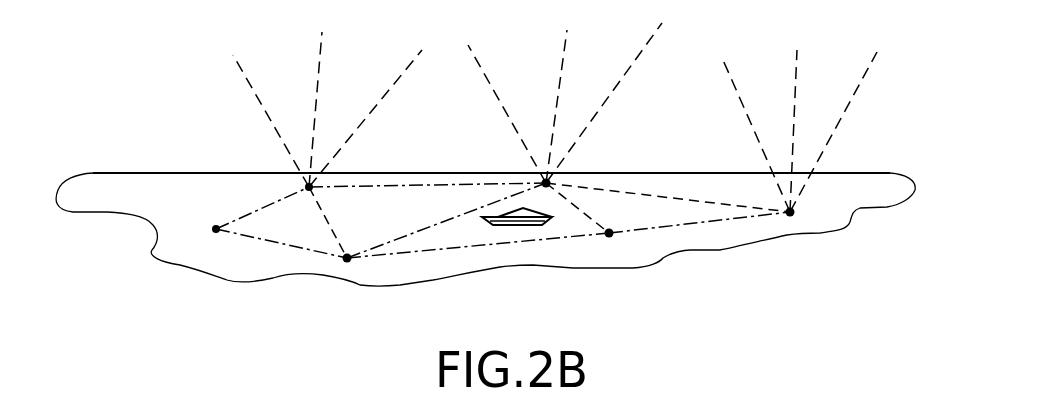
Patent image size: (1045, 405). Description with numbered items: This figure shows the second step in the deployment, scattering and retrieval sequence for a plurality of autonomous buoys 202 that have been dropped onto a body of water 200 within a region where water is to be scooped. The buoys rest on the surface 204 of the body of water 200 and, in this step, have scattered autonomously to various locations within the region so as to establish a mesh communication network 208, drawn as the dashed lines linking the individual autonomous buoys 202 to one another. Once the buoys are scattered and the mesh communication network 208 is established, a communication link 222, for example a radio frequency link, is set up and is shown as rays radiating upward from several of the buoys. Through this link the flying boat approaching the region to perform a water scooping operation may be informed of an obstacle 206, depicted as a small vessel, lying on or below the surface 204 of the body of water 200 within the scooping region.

The body of water 200 is at (130, 228).
The plurality of autonomous buoys 202 is at (347, 258).
The surface 204 is at (168, 204).
The obstacle 206 is at (527, 220).
The mesh communication network 208 is at (257, 240).
The communication link 222 is at (395, 80).